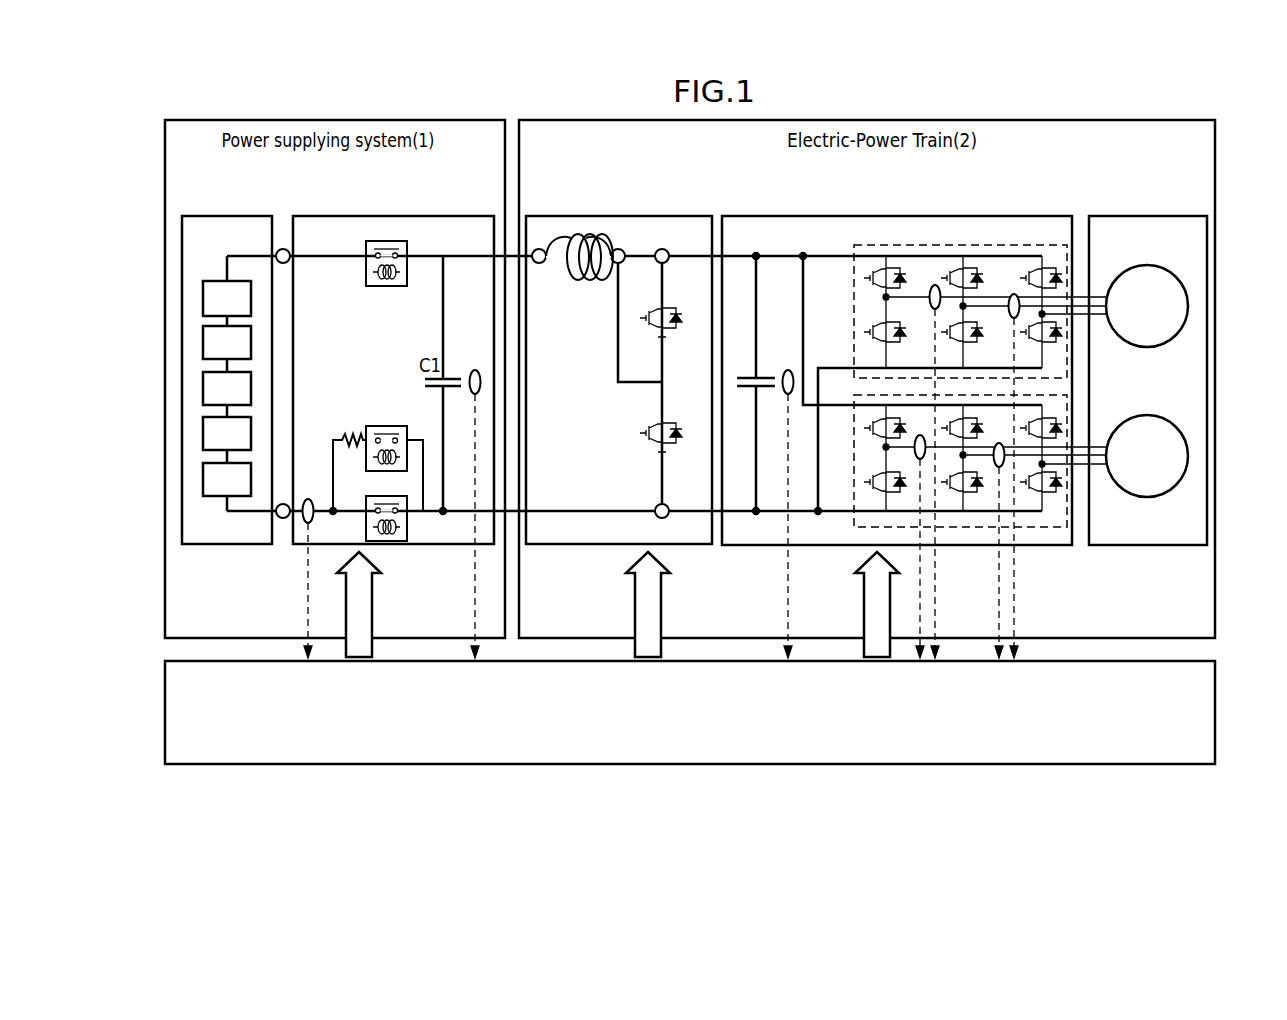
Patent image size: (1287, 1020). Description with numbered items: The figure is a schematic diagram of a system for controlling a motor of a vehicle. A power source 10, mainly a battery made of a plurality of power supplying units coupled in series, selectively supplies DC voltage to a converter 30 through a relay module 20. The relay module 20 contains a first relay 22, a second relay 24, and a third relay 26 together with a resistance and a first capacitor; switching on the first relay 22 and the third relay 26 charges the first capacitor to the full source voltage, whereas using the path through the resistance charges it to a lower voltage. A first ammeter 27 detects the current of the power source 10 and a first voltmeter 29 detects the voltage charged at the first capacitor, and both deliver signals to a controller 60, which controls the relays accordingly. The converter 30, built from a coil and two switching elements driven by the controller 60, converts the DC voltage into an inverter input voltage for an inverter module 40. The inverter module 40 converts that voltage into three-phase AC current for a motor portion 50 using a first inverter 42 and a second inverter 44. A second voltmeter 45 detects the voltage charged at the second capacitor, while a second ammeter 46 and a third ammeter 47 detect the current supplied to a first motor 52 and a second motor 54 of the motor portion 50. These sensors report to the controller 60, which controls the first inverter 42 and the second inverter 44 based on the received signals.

The power source 10 is at (227, 216).
The relay module 20 is at (395, 216).
The first relay 22 is at (386, 287).
The second relay 24 is at (386, 426).
The third relay 26 is at (390, 541).
The first ammeter 27 is at (306, 523).
The first voltmeter 29 is at (474, 369).
The converter 30 is at (618, 216).
The inverter module 40 is at (896, 216).
The first inverter 42 is at (925, 245).
The second inverter 44 is at (1050, 527).
The second voltmeter 45 is at (788, 370).
The second ammeter 46 is at (1014, 294).
The third ammeter 47 is at (920, 459).
The motor portion 50 is at (1147, 216).
The first motor 52 is at (1188, 306).
The second motor 54 is at (1188, 456).
The controller 60 is at (1215, 712).